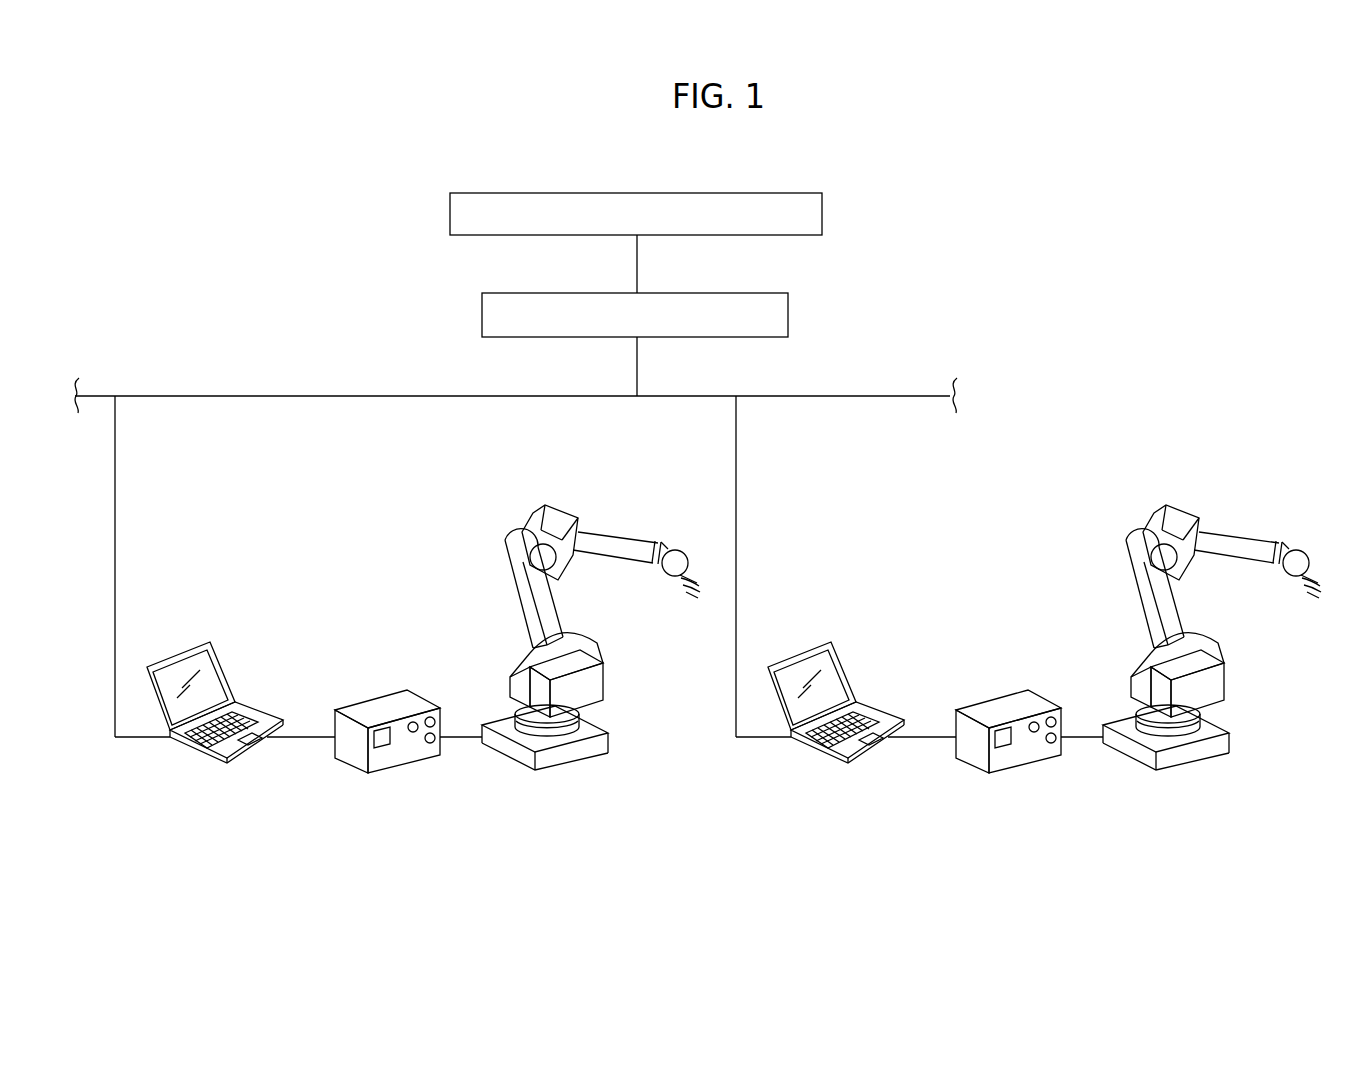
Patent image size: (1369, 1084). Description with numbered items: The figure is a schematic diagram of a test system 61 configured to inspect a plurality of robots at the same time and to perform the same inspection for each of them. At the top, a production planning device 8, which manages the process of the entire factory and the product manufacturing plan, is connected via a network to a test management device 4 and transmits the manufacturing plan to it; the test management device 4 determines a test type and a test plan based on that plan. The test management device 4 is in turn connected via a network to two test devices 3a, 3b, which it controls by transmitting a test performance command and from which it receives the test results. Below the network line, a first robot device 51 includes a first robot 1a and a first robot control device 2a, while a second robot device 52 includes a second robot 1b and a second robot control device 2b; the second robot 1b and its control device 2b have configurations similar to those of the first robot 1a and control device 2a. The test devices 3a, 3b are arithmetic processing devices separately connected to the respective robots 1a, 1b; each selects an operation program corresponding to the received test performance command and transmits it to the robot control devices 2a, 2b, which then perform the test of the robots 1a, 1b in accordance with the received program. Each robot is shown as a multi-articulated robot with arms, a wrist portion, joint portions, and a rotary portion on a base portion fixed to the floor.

The test system 61 is at (948, 189).
The production planning device 8 is at (822, 211).
The test management device 4 is at (788, 313).
The first robot device 51 is at (474, 794).
The second robot device 52 is at (1036, 668).
The first robot 1a is at (543, 508).
The second robot 1b is at (1183, 658).
The first robot control device 2a is at (393, 755).
The second robot control device 2b is at (1008, 776).
The test device 3a is at (247, 750).
The test device 3b is at (836, 750).